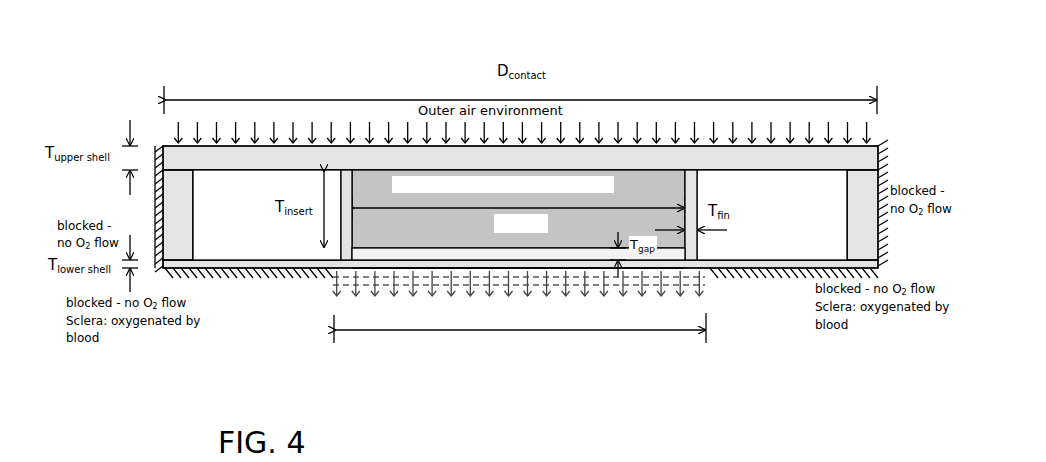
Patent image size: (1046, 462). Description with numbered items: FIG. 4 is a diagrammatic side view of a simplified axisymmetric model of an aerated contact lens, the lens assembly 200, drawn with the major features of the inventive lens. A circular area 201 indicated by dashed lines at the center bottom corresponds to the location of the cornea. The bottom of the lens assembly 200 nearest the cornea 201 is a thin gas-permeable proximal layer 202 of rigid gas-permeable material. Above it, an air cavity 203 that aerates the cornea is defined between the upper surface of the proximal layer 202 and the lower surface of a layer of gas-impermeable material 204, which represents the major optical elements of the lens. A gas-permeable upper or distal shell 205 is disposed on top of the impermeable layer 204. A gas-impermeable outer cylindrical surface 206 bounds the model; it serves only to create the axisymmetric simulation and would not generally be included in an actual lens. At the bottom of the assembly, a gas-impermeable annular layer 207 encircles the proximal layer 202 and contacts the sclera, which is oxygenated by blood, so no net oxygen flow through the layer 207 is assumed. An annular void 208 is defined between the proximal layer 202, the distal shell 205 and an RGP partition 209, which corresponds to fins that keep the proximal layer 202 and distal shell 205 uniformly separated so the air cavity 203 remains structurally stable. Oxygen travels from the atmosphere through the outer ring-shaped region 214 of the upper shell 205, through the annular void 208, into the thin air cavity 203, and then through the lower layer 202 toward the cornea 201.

The lens assembly 200 is at (348, 81).
The cornea 201 is at (408, 272).
The gas-permeable proximal layer 202 is at (447, 270).
The air cavity 203 is at (582, 258).
The gas-impermeable material layer 204 is at (622, 178).
The gas-permeable upper (distal) shell 205 is at (690, 153).
The gas-impermeable outer cylindrical surface 206 is at (160, 208).
The gas-impermeable annular layer 207 is at (288, 271).
The annular void 208 is at (761, 240).
The RGP partition (fins) 209 is at (700, 182).
The outer ring-shaped region 214 is at (264, 158).